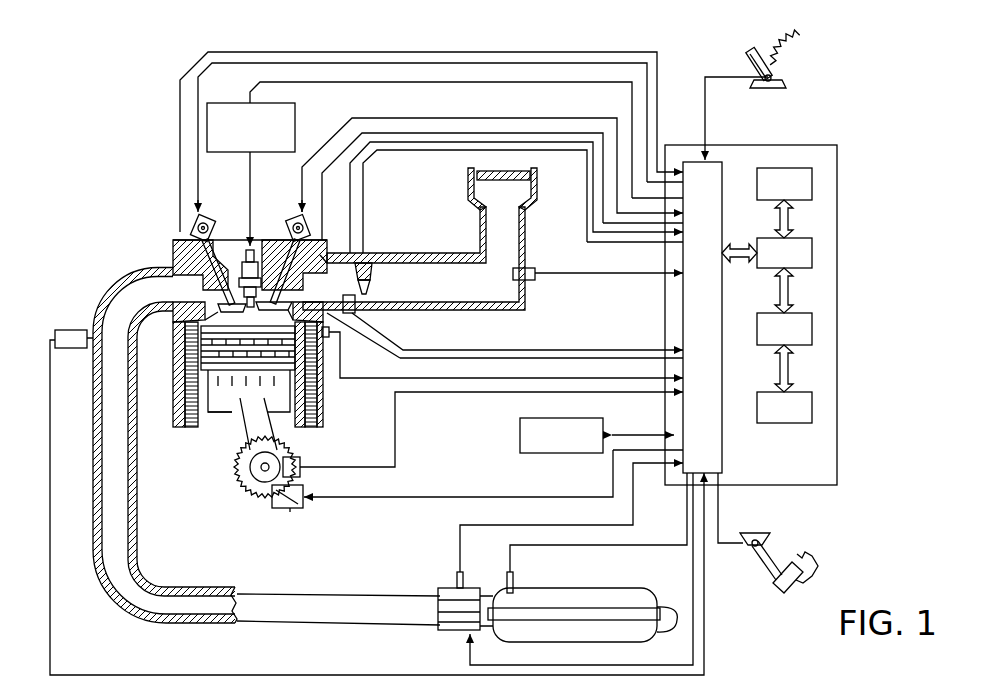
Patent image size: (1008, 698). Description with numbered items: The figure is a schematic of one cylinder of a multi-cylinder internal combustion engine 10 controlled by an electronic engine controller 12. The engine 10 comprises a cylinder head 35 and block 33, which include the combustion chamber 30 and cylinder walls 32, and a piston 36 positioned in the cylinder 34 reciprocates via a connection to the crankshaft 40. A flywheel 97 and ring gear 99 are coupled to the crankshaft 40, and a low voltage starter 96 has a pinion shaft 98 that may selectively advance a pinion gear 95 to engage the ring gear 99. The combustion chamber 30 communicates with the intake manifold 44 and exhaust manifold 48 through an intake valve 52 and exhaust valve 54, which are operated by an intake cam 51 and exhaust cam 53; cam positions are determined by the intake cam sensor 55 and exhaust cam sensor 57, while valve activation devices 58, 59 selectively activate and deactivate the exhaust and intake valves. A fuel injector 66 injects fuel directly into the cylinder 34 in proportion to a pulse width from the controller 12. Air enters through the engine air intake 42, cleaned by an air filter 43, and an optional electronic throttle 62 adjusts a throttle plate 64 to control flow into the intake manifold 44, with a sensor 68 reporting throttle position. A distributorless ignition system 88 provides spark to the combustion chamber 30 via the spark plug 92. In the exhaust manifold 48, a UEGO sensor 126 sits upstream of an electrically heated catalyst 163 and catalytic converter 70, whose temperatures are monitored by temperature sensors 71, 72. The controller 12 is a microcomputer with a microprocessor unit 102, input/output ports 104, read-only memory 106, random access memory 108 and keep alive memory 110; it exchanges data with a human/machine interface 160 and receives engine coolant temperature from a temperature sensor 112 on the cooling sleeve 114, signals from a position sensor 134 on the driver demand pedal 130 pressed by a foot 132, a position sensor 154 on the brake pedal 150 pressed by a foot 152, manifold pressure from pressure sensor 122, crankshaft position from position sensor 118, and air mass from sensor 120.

The internal combustion engine 10 is at (117, 205).
The electronic engine controller 12 is at (836, 146).
The combustion chamber 30 is at (248, 313).
The cylinder walls 32 is at (210, 422).
The block 33 is at (172, 345).
The cylinder 34 is at (228, 421).
The cylinder head 35 is at (166, 237).
The piston 36 is at (238, 392).
The crankshaft 40 is at (247, 488).
The engine air intake 42 is at (462, 184).
The air filter 43 is at (514, 180).
The intake manifold 44 is at (346, 290).
The exhaust manifold 48 is at (160, 297).
The intake cam 51 is at (298, 216).
The intake valve 52 is at (292, 292).
The exhaust cam 53 is at (206, 216).
The exhaust valve 54 is at (205, 290).
The intake cam sensor 55 is at (310, 233).
The exhaust cam sensor 57 is at (194, 233).
The valve activation device 58 is at (212, 232).
The valve activation device 59 is at (288, 238).
The electronic throttle 62 is at (372, 270).
The throttle plate 64 is at (364, 293).
The fuel injector 66 is at (331, 336).
The throttle position sensor 68 is at (320, 262).
The catalytic converter 70 is at (524, 588).
The temperature sensor 71 is at (466, 575).
The temperature sensor 72 is at (516, 575).
The distributorless ignition system 88 is at (218, 103).
The spark plug 92 is at (252, 243).
The pinion gear 95 is at (294, 510).
The starter 96 is at (301, 508).
The flywheel 97 is at (238, 476).
The pinion shaft 98 is at (282, 508).
The ring gear 99 is at (258, 490).
The microprocessor unit 102 is at (813, 252).
The input/output ports 104 is at (724, 164).
The read-only memory 106 is at (813, 181).
The random access memory 108 is at (813, 328).
The keep alive memory 110 is at (813, 406).
The temperature sensor 112 is at (506, 355).
The cooling sleeve 114 is at (318, 392).
The position sensor 118 is at (302, 460).
The air mass sensor 120 is at (535, 268).
The pressure sensor 122 is at (356, 310).
The Universal Exhaust Gas Oxygen sensor 126 is at (55, 333).
The driver demand pedal 130 is at (752, 57).
The foot 132 is at (798, 48).
The position sensor 134 is at (784, 84).
The brake pedal 150 is at (772, 578).
The foot 152 is at (800, 553).
The position sensor 154 is at (748, 537).
The human/machine interface 160 is at (597, 435).
The electrically heated catalyst 163 is at (458, 623).